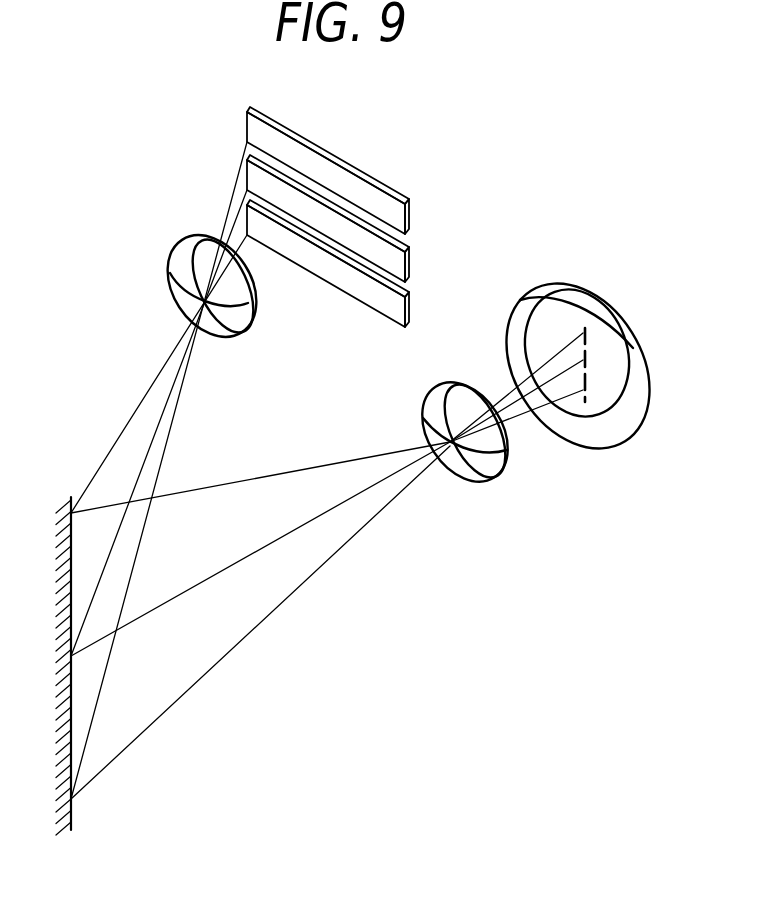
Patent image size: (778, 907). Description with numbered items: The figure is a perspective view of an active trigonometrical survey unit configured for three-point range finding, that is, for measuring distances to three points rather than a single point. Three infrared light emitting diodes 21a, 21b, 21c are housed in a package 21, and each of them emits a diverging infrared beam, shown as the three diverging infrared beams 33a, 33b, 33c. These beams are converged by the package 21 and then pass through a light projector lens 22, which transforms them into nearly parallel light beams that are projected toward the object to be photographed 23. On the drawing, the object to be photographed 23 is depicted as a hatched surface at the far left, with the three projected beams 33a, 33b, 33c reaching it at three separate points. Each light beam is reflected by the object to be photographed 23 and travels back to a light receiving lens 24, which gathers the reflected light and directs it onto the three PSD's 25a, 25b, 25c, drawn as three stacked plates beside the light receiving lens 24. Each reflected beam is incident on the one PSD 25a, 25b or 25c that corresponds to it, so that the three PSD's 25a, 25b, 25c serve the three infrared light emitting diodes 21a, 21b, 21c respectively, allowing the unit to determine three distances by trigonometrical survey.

The package 21 is at (561, 283).
The infrared light emitting diode 21a is at (595, 333).
The infrared light emitting diode 21b is at (593, 360).
The infrared light emitting diode 21c is at (593, 390).
The light projector lens 22 is at (482, 486).
The object to be photographed 23 is at (70, 812).
The light receiving lens 24 is at (235, 337).
The PSD 25a is at (408, 208).
The PSD 25b is at (408, 257).
The PSD 25c is at (408, 298).
The diverging infrared beam 33a is at (200, 685).
The diverging infrared beam 33b is at (180, 598).
The diverging infrared beam 33c is at (200, 488).